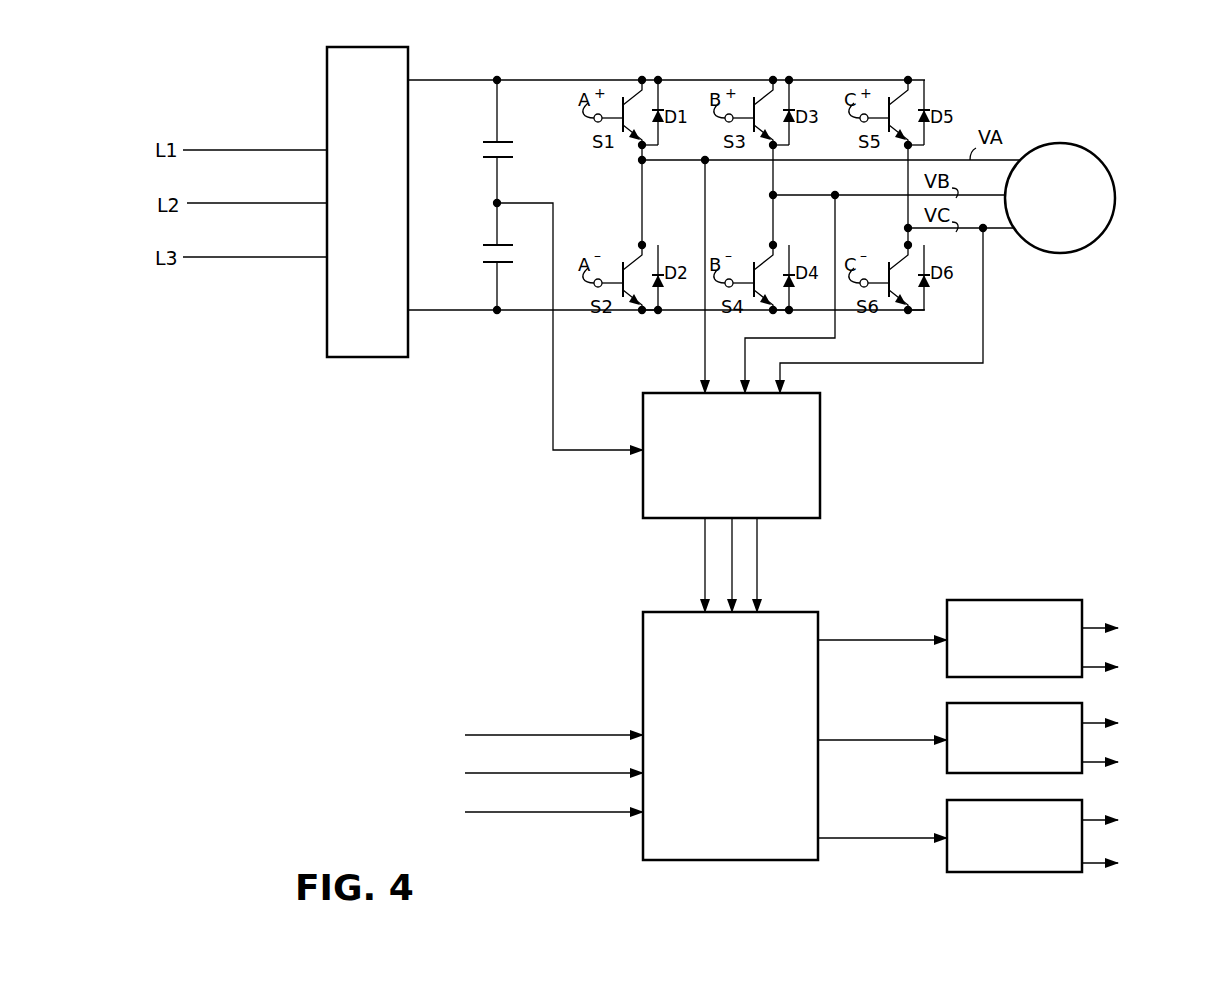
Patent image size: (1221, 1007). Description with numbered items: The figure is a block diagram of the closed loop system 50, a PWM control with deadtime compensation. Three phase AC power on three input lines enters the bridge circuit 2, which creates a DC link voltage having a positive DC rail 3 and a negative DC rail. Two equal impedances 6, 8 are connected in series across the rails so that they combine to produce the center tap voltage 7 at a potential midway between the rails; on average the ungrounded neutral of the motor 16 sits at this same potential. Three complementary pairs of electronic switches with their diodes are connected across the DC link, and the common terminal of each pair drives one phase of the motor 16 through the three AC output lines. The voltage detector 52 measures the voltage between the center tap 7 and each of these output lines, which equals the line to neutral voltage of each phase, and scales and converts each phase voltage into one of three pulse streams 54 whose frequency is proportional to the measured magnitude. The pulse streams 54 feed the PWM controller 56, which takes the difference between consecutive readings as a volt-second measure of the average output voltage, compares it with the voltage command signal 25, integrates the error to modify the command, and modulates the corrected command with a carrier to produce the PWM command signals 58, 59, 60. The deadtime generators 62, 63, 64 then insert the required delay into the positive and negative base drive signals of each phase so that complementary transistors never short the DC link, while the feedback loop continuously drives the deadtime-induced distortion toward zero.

The bridge circuit 2 is at (378, 50).
The positive DC rail 3 is at (478, 80).
The impedance 6 is at (502, 146).
The center tap voltage 7 is at (505, 203).
The impedance 8 is at (503, 262).
The motor 16 is at (1067, 145).
The voltage command signal 25 is at (554, 745).
The closed loop system 50 is at (450, 621).
The voltage detector 52 is at (820, 466).
The pulse streams 54 is at (704, 562).
The PWM controller 56 is at (663, 612).
The PWM command signal 58 is at (873, 640).
The PWM command signal 59 is at (880, 740).
The PWM command signal 60 is at (868, 838).
The deadtime generator 62 is at (1062, 604).
The deadtime generator 63 is at (1074, 705).
The deadtime generator 64 is at (1072, 802).